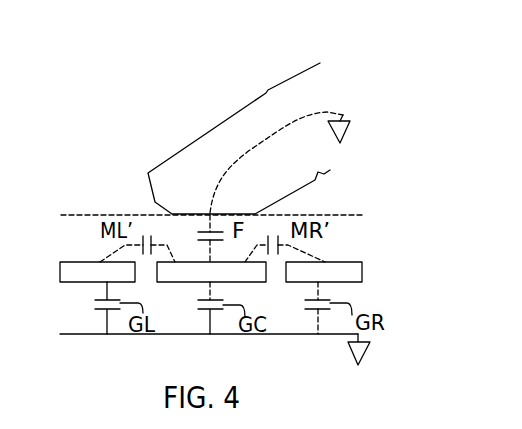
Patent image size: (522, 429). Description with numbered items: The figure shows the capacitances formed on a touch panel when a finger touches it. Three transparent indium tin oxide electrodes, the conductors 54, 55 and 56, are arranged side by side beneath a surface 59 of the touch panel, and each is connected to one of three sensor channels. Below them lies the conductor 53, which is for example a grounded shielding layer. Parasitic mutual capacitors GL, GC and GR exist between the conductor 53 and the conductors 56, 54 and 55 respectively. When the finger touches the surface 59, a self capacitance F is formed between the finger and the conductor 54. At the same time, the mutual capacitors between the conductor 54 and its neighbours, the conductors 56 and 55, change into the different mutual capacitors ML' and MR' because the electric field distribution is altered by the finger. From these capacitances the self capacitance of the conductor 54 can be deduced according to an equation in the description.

The conductor 53 is at (68, 334).
The conductor 54 is at (177, 283).
The conductor 55 is at (343, 262).
The conductor 56 is at (70, 262).
The surface 59 is at (128, 215).